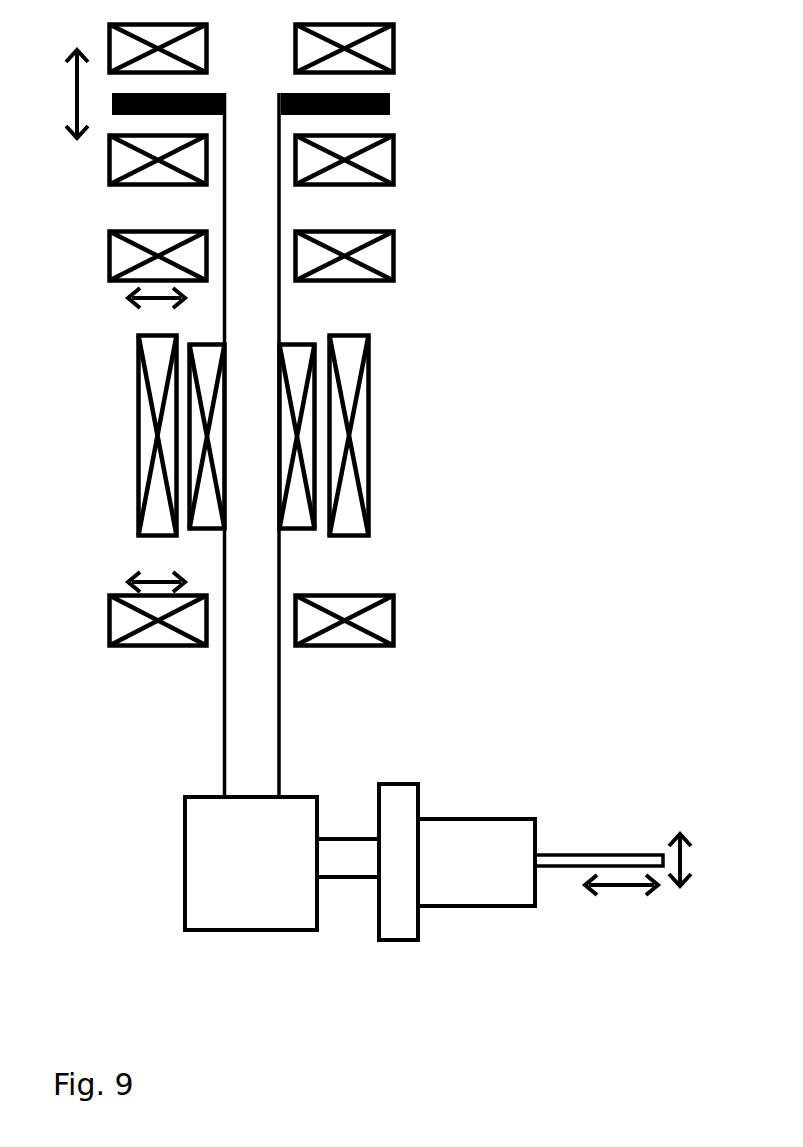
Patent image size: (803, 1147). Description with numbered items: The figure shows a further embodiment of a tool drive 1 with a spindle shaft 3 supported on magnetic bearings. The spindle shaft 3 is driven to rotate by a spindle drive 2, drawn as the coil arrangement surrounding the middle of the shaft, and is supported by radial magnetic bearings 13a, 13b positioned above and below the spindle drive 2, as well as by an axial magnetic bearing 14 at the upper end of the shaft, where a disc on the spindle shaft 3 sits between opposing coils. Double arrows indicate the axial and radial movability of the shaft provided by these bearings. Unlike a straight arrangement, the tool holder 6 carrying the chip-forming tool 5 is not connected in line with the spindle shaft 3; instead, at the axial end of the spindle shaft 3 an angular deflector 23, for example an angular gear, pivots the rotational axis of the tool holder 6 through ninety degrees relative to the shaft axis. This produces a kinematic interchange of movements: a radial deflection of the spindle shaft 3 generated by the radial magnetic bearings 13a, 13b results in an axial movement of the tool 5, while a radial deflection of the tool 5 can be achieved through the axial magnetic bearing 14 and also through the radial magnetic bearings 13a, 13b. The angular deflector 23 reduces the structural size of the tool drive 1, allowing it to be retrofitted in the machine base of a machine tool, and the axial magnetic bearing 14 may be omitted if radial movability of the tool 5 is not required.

The tool drive 1 is at (620, 152).
The spindle drive 2 is at (371, 413).
The spindle shaft 3 is at (264, 325).
The tool 5 is at (600, 853).
The tool holder 6 is at (508, 817).
The radial magnetic bearing 13a is at (396, 250).
The radial magnetic bearing 13b is at (396, 610).
The axial magnetic bearing 14 is at (396, 50).
The angular deflector 23 is at (271, 872).